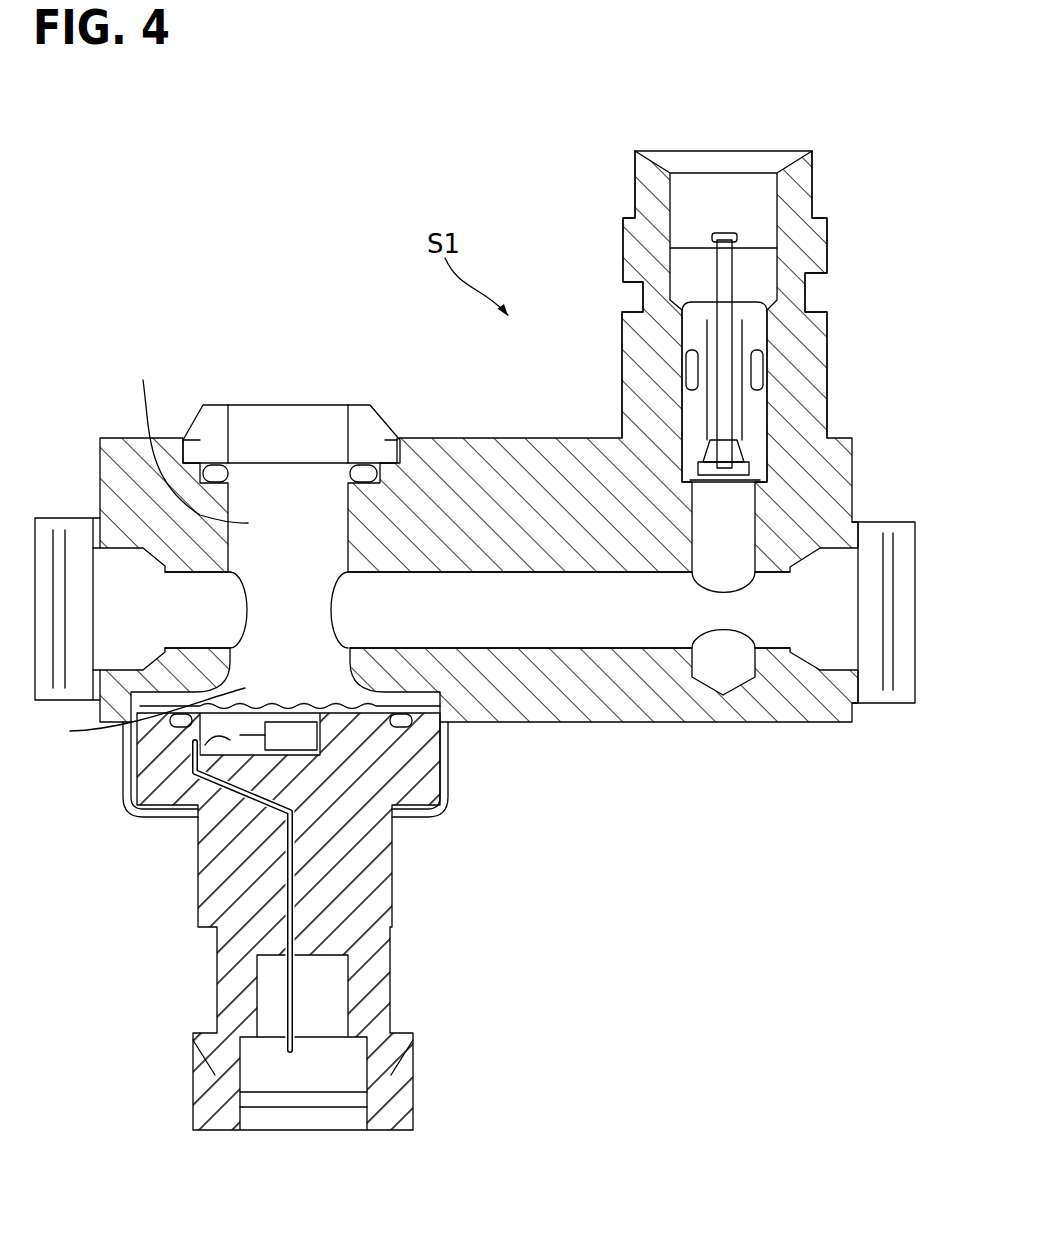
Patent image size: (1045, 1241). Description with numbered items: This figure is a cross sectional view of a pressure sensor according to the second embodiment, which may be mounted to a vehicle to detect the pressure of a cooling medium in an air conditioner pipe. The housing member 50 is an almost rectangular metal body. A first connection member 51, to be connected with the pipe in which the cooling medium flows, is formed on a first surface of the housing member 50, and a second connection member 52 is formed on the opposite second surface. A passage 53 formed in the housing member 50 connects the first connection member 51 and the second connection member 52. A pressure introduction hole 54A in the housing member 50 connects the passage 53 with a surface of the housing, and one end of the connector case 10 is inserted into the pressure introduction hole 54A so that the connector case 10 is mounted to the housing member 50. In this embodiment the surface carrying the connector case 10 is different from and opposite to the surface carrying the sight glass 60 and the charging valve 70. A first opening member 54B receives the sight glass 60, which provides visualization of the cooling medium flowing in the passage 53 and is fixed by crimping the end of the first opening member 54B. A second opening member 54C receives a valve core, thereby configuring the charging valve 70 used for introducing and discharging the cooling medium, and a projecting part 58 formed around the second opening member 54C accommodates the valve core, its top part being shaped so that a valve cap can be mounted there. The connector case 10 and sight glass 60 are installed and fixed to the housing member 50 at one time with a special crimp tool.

The connector case 10 is at (373, 897).
The housing member 50 is at (480, 438).
The first connection member 51 is at (72, 518).
The second connection member 52 is at (903, 522).
The passage 53 is at (552, 622).
The pressure introduction hole 54A is at (131, 716).
The first opening member 54B is at (185, 437).
The second opening member 54C is at (765, 418).
The projecting part 58 is at (826, 318).
The sight glass 60 is at (278, 405).
The charging valve 70 is at (818, 160).